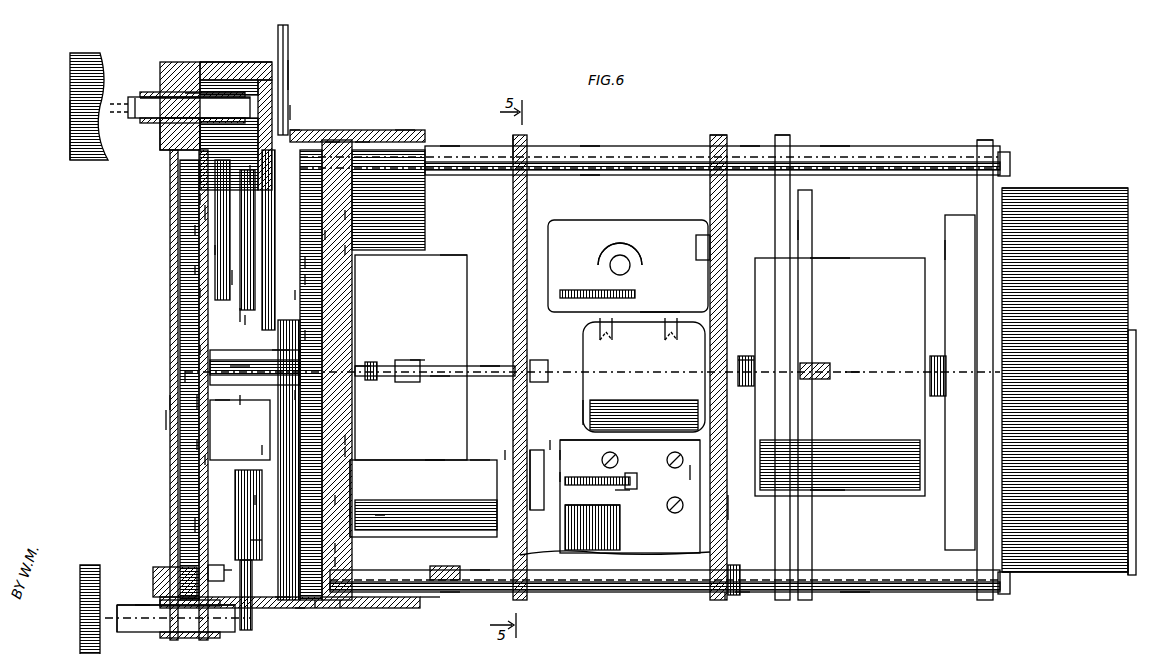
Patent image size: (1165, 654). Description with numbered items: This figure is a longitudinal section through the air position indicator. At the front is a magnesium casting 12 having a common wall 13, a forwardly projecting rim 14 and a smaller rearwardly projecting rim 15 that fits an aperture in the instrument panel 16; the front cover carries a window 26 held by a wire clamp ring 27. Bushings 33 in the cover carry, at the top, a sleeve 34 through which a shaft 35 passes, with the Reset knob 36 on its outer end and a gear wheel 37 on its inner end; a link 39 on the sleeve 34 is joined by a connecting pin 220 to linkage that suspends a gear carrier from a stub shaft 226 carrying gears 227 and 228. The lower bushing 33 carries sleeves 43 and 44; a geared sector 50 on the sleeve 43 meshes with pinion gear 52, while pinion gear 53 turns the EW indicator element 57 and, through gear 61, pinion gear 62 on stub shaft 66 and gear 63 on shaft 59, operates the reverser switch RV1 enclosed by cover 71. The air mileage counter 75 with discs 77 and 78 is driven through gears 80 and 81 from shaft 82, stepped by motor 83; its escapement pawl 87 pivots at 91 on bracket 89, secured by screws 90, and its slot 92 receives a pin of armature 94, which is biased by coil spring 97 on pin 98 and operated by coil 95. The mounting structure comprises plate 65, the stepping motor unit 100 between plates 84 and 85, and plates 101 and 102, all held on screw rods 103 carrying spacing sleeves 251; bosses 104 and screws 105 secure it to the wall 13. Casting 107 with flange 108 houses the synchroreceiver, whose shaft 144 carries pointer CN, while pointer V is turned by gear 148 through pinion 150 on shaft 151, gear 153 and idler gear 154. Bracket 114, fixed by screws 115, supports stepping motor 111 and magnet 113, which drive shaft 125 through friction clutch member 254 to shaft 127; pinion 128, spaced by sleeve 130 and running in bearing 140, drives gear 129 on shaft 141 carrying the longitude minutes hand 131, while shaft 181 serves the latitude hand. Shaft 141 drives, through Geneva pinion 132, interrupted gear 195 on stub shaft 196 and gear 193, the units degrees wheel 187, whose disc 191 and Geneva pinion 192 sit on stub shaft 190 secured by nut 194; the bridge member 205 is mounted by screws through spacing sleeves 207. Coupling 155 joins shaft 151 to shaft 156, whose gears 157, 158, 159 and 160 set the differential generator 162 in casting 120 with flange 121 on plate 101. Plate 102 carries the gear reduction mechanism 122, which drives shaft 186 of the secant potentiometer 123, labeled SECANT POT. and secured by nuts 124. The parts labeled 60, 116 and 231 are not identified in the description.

The shaft 35 is at (137, 96).
The bushings 33 is at (190, 94).
The sleeve 34 is at (160, 98).
The forwardly projecting rim 14 is at (236, 62).
The reset knob 36 is at (72, 138).
The link 39 is at (200, 140).
The connecting pin 220 is at (254, 170).
The spacing sleeves 207 is at (200, 175).
The variation pointer V is at (200, 198).
The bridge member 205 is at (205, 212).
The instrument panel 16 is at (289, 52).
The gear wheel 37 is at (288, 74).
The gear 227 is at (290, 112).
The casing wall 13 is at (296, 130).
The stub shaft 226 is at (330, 140).
The gear 228 is at (360, 140).
The rearwardly projecting rim 15 is at (405, 135).
The spacing sleeves 251 is at (450, 147).
The frame plate 84 is at (517, 140).
The stepping motor unit 100 is at (592, 148).
The frame plate 85 is at (722, 135).
The plate 101 is at (785, 137).
The screw rods 103 is at (830, 163).
The plate 102 is at (984, 140).
The nuts 124 is at (1010, 162).
The secant potentiometer 123 is at (1092, 190).
The gear 193 is at (195, 230).
The stub shaft 190 is at (215, 250).
The pointer CN is at (195, 270).
The disc 191 is at (232, 278).
The Geneva pinion 192 is at (200, 293).
The units degrees register wheel 187 is at (240, 315).
The interrupted gear 195 is at (245, 320).
The Geneva pinion 132 is at (200, 350).
The synchro-receiver shaft 144 is at (190, 376).
The window 26 is at (172, 403).
The wire clamp ring 27 is at (165, 420).
The longitude minutes hand 131 is at (197, 402).
The shaft 141 is at (240, 372).
The bushing type bearing 140 is at (228, 404).
The air mileage counter 75 is at (245, 400).
The gear 148 is at (278, 350).
The screws 105 is at (350, 215).
The bosses 104 is at (330, 236).
The circular flange 108 is at (350, 250).
The casting 107 is at (453, 262).
The member 231 is at (310, 262).
The nut 194 is at (310, 280).
The stub shaft 196 is at (300, 295).
The gear 129 is at (310, 335).
The pinion gear 128 is at (305, 346).
The shaft 127 is at (360, 365).
The friction clutch member 254 is at (420, 364).
The shaft 181 is at (490, 365).
The shaft 125 is at (440, 376).
The sleeve 130 is at (300, 395).
The gear 80 is at (350, 440).
The escapement pawl 87 is at (510, 455).
The mounting bracket 89 is at (555, 445).
The stepping motor 83 is at (575, 445).
The stepping motor 111 is at (583, 412).
The stepping magnet 113 is at (612, 256).
The screws 115 is at (698, 245).
The bracket 114 is at (658, 312).
The pins 116 is at (648, 334).
The gear 160 is at (752, 362).
The casting flange 121 is at (800, 230).
The casting 120 is at (828, 270).
The gear reduction mechanism 122 is at (945, 250).
The shaft 186 is at (1132, 375).
The numeral bearing disc 78 is at (197, 445).
The numeral bearing disc 77 is at (205, 460).
The indicator element 57 is at (195, 525).
The sleeve 44 is at (125, 604).
The sleeve 43 is at (140, 604).
The pinion gear 52 is at (216, 570).
The pinion gear 53 is at (226, 575).
The pinion 150 is at (255, 540).
The pinion 153 is at (260, 500).
The idler gear 154 is at (265, 450).
The geared sector 50 is at (212, 620).
The member 60 is at (280, 600).
The gear 81 is at (350, 452).
The drive shaft 82 is at (435, 462).
The cover 71 is at (478, 462).
The shaft 59 is at (340, 500).
The gear 63 is at (355, 512).
The reverser switch RV1 is at (414, 498).
The stub shaft 66 is at (340, 548).
The pinion gear 62 is at (340, 562).
The shaft 156 is at (478, 572).
The casting 12 is at (432, 600).
The coupling 155 is at (450, 594).
The plate 65 is at (320, 608).
The shaft 151 is at (348, 608).
The gear 61 is at (300, 610).
The pivot 91 is at (526, 472).
The slot 92 is at (570, 455).
The magnet armature 94 is at (575, 477).
The pin 98 is at (635, 494).
The screws 90 is at (690, 472).
The coil spring 97 is at (622, 495).
The operating coil 95 is at (620, 520).
The gear 159 is at (738, 505).
The differential generator 162 is at (827, 482).
The gear 157 is at (728, 600).
The gear 158 is at (742, 592).
The secant potentiometer SECANT is at (1025, 572).